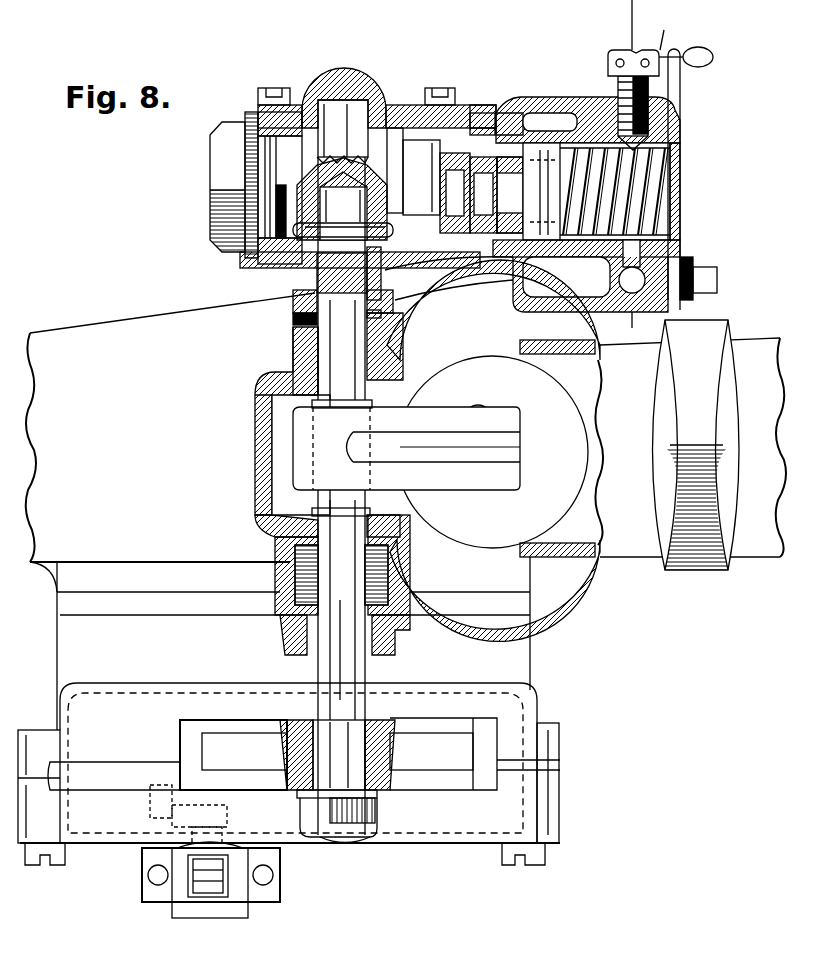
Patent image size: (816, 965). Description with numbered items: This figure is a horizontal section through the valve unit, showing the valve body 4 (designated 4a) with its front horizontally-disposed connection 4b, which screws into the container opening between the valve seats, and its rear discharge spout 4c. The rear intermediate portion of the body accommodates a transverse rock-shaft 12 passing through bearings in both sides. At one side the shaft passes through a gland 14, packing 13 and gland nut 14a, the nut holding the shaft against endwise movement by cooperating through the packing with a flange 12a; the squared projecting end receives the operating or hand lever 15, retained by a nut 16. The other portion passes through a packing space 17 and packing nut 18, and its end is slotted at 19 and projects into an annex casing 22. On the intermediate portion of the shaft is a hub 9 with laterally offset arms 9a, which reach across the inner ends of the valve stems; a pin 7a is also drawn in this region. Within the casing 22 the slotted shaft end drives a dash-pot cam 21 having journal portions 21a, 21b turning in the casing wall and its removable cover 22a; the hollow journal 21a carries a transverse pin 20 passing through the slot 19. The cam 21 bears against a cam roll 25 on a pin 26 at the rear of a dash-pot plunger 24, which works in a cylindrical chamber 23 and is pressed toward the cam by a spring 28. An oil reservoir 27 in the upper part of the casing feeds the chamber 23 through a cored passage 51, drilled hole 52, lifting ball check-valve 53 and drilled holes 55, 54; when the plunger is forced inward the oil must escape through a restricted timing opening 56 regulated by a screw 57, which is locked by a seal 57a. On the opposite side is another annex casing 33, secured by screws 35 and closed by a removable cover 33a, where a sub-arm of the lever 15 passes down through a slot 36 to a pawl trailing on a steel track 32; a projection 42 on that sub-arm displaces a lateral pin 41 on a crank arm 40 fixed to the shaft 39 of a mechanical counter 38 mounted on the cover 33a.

The valve body 4 is at (262, 430).
The valve body 4a is at (260, 470).
The horizontally-disposed connection 4b is at (738, 545).
The discharge spout 4c is at (88, 340).
The pin 7a is at (474, 405).
The hub 9 is at (300, 460).
The laterally offset arms 9a is at (520, 432).
The rock-shaft 12 is at (370, 508).
The flange 12a is at (280, 542).
The packing 13 is at (280, 598).
The gland 14 is at (280, 578).
The gland nut 14a is at (283, 642).
The operating or hand lever 15 is at (392, 748).
The nut 16 is at (315, 828).
The packing space 17 is at (292, 345).
The packing nut 18 is at (292, 318).
The slot 19 is at (300, 282).
The transverse pin 20 is at (356, 230).
The dash-pot cam 21 is at (421, 185).
The journal portion 21a is at (382, 283).
The journal portion 21b is at (337, 115).
The annex casing 22 is at (477, 128).
The removable cover 22a is at (405, 110).
The cylindrical chamber 23 is at (572, 130).
The dash-pot plunger 24 is at (548, 155).
The cam roll 25 is at (444, 218).
The pin 26 is at (444, 228).
The oil reservoir 27 is at (512, 108).
The spring 28 is at (662, 181).
The steel track 32 is at (420, 768).
The annex casing 33 is at (408, 685).
The removable cover 33a is at (428, 835).
The screws 35 is at (62, 862).
The slot 36 is at (458, 785).
The mechanical counter 38 is at (195, 905).
The shaft 39 is at (192, 836).
The crank arm 40 is at (228, 808).
The lateral pin 41 is at (150, 800).
The projection 42 is at (275, 787).
The cored passage 51 is at (528, 290).
The drilled hole 52 is at (578, 303).
The lifting ball check-valve 53 is at (618, 285).
The drilled hole 54 is at (650, 258).
The drilled hole 55 is at (688, 297).
The restricted timing opening 56 is at (650, 137).
The screw 57 is at (660, 70).
The seal 57a is at (662, 52).